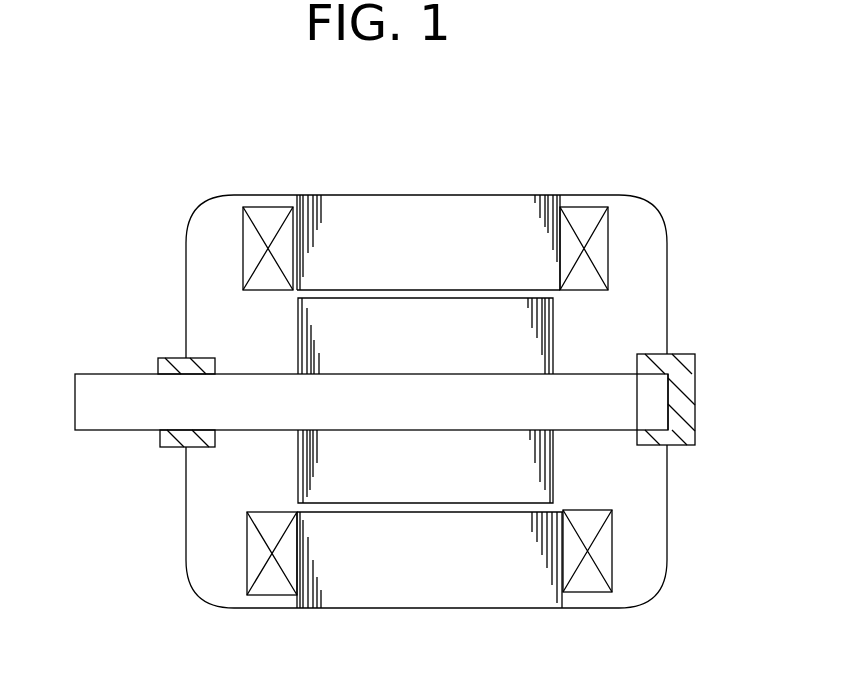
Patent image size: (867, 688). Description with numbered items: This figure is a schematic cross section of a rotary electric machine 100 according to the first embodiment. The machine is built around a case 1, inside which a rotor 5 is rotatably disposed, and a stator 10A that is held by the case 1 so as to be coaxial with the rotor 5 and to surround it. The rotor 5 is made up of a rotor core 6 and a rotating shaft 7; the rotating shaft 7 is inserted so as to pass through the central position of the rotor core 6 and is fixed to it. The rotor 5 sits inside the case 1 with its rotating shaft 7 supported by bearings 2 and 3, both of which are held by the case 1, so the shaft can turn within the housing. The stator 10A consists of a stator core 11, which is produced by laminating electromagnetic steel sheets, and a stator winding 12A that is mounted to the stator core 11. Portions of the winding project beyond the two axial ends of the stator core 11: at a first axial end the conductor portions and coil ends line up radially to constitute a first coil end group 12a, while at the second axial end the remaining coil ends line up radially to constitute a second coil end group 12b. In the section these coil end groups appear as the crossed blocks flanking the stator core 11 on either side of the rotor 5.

The rotary electric machine 100 is at (117, 120).
The case 1 is at (188, 227).
The bearing 2 is at (168, 358).
The bearing 3 is at (680, 355).
The rotor 5 is at (423, 379).
The rotor core 6 is at (312, 318).
The rotating shaft 7 is at (113, 382).
The stator 10A is at (451, 349).
The stator core 11 is at (505, 200).
The stator winding 12A is at (576, 204).
The first coil end group 12a is at (607, 215).
The second coil end group 12b is at (262, 213).